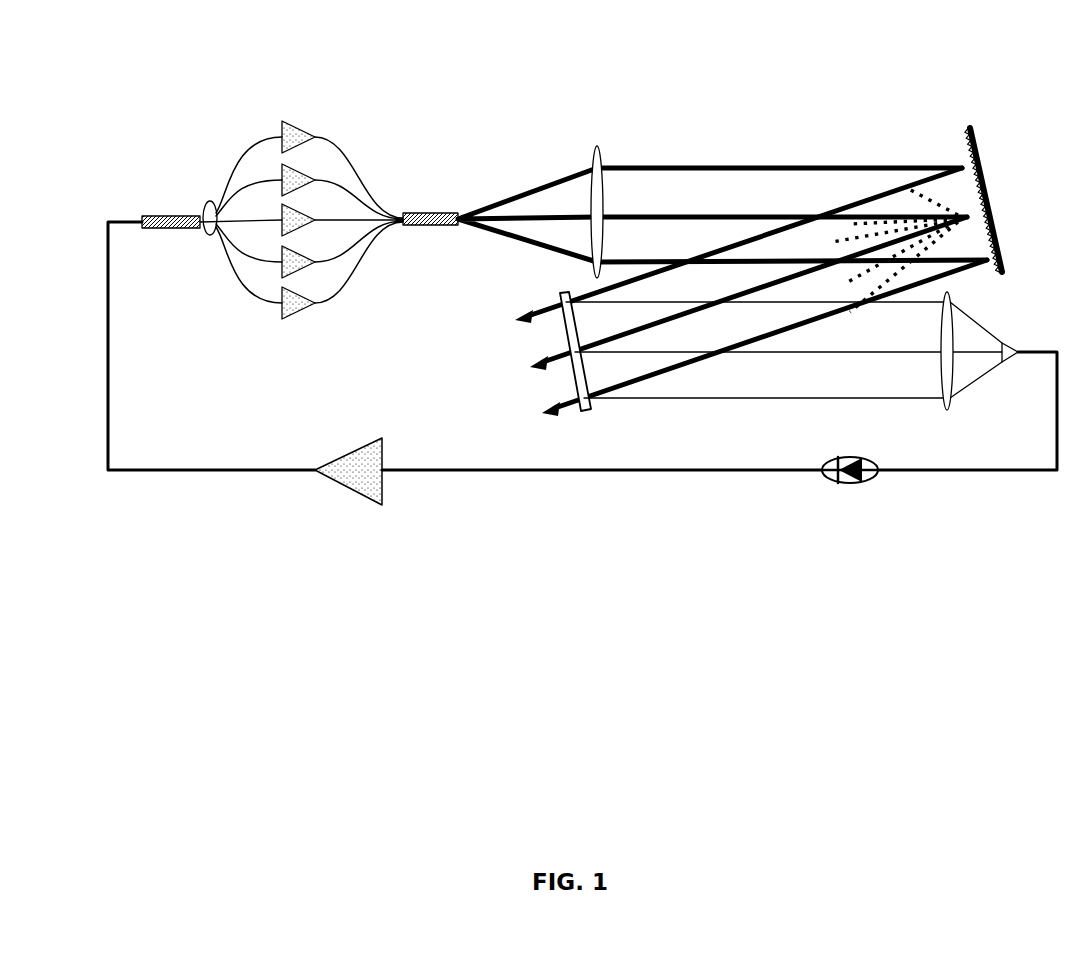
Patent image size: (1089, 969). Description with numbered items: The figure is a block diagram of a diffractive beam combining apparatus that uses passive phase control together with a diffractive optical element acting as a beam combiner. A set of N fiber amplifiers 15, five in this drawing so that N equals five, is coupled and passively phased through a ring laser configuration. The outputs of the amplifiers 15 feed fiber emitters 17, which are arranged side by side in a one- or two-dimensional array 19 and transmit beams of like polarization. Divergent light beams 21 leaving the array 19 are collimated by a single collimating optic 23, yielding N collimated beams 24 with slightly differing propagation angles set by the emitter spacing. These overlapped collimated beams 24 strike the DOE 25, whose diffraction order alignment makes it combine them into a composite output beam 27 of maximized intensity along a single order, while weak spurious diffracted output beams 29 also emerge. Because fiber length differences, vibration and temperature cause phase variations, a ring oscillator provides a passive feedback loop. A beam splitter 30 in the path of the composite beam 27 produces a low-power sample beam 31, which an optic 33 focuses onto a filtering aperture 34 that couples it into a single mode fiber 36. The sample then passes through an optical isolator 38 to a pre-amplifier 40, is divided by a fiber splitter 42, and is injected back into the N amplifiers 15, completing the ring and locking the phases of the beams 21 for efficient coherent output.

The fiber amplifiers 15 is at (314, 201).
The fiber emitters 17 is at (346, 142).
The array 19 is at (421, 212).
The divergent light beams 21 is at (523, 163).
The collimating optic 23 is at (598, 144).
The collimated beam 24 is at (730, 147).
The DOE 25 is at (964, 127).
The composite output beam 27 is at (500, 303).
The spurious diffracted output beams 29 is at (910, 187).
The beam splitter 30 is at (590, 411).
The sample beam 31 is at (788, 413).
The optic 33 is at (951, 407).
The filtering aperture 34 is at (1013, 346).
The single mode fiber 36 is at (711, 471).
The optical isolator 38 is at (863, 481).
The pre-amplifier 40 is at (340, 456).
The fiber splitter 42 is at (181, 215).
The number of amplifiers N is at (214, 237).